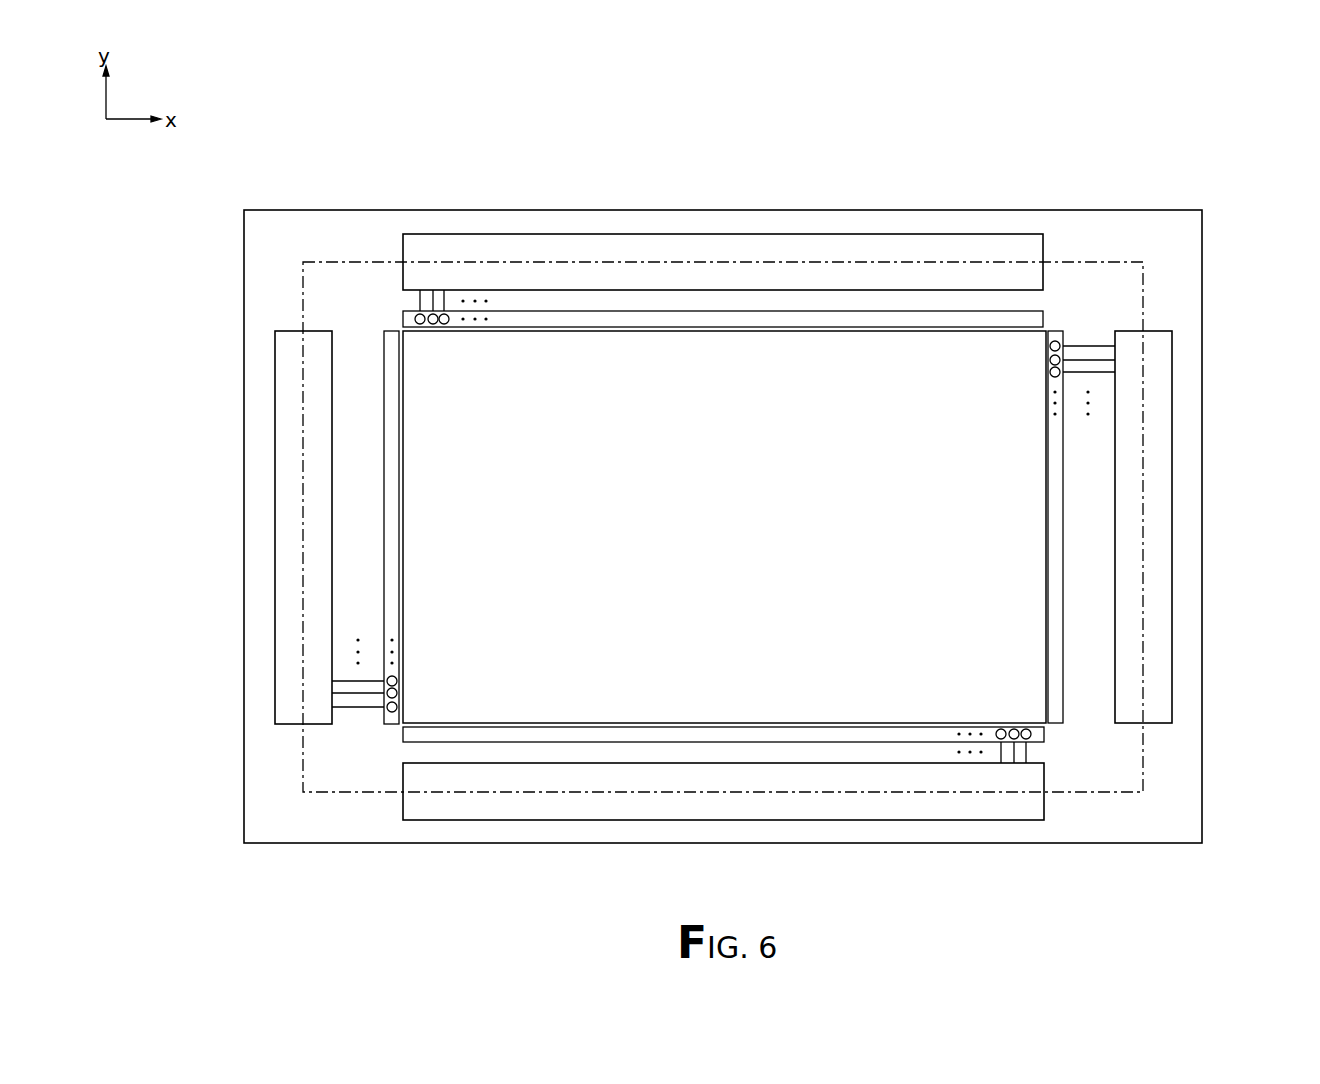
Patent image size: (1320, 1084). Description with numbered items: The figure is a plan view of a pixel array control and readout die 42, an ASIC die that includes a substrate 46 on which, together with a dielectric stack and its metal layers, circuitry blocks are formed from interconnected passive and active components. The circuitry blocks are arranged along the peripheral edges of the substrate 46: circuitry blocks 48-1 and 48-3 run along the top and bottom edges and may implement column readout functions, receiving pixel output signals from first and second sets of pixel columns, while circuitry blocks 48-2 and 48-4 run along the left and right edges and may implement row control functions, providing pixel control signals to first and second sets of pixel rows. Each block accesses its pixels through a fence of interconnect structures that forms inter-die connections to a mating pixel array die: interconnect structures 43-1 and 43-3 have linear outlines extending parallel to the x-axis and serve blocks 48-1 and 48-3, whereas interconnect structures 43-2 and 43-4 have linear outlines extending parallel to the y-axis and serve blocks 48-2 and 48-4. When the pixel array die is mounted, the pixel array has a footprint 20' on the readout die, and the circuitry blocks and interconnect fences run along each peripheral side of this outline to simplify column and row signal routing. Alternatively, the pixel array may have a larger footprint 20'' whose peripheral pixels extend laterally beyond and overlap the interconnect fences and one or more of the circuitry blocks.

The pixel array control and readout die 42 is at (1222, 137).
The substrate 46 is at (1202, 235).
The footprint 20'' is at (723, 476).
The footprint 20' is at (766, 500).
The circuitry block 48-1 is at (720, 234).
The circuitry block 48-2 is at (275, 565).
The circuitry block 48-3 is at (731, 820).
The circuitry block 48-4 is at (1172, 493).
The interconnect structures 43-1 is at (403, 318).
The interconnect structures 43-2 is at (386, 720).
The interconnect structures 43-3 is at (1044, 737).
The interconnect structures 43-4 is at (1063, 718).